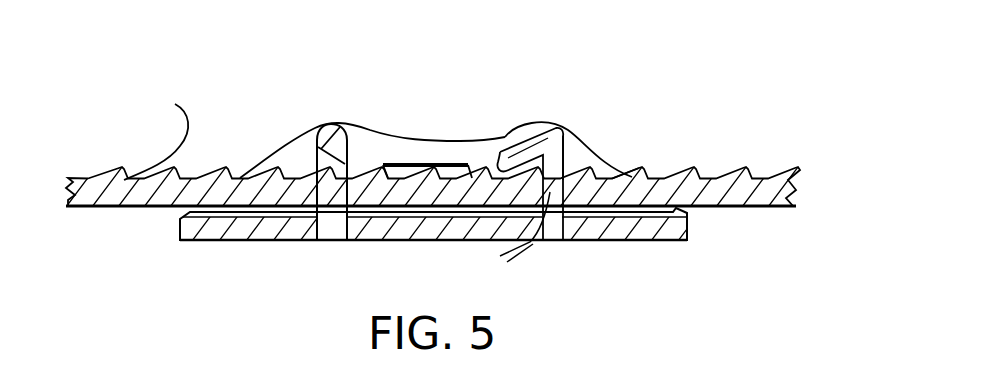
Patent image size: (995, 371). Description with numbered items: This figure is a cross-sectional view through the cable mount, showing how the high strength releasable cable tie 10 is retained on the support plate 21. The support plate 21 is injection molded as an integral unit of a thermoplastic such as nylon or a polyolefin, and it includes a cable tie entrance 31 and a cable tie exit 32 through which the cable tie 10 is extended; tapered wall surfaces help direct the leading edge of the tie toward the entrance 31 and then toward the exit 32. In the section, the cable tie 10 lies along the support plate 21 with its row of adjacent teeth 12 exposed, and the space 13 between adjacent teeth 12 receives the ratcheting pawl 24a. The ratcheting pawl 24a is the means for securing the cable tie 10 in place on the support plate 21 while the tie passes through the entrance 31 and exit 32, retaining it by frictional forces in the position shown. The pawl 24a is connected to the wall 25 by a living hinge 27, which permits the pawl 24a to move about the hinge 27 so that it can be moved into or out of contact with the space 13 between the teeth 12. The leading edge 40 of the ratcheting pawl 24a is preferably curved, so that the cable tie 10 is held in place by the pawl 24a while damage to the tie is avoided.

The cable tie 10 is at (780, 185).
The teeth 12 is at (337, 185).
The space between adjacent teeth 13 is at (540, 195).
The support plate 21 is at (688, 230).
The ratcheting pawl 24a is at (515, 143).
The wall 25 is at (606, 173).
The living hinge 27 is at (568, 168).
The cable tie entrance 31 is at (572, 168).
The cable tie exit 32 is at (320, 153).
The leading edge of ratcheting pawl 40 is at (527, 146).